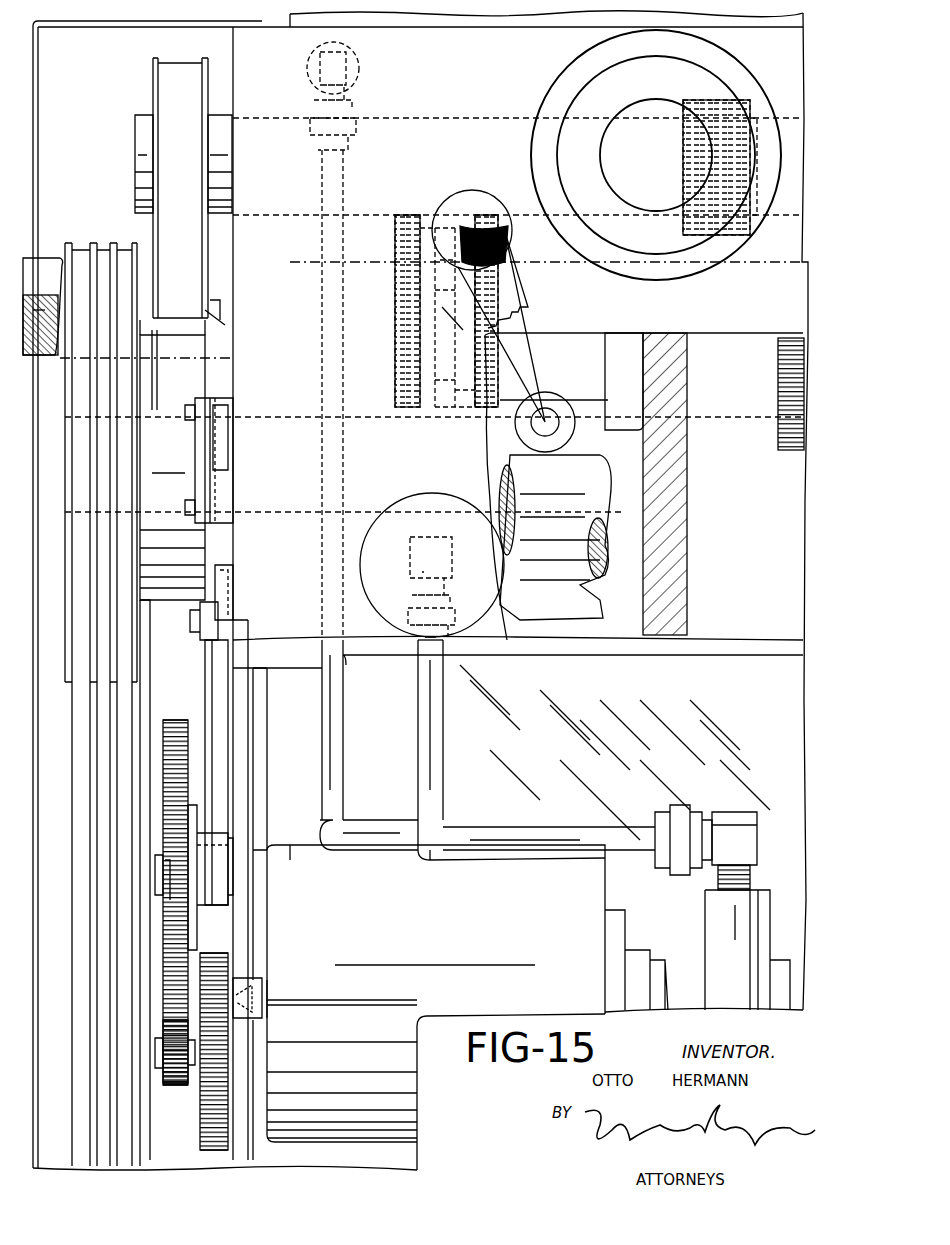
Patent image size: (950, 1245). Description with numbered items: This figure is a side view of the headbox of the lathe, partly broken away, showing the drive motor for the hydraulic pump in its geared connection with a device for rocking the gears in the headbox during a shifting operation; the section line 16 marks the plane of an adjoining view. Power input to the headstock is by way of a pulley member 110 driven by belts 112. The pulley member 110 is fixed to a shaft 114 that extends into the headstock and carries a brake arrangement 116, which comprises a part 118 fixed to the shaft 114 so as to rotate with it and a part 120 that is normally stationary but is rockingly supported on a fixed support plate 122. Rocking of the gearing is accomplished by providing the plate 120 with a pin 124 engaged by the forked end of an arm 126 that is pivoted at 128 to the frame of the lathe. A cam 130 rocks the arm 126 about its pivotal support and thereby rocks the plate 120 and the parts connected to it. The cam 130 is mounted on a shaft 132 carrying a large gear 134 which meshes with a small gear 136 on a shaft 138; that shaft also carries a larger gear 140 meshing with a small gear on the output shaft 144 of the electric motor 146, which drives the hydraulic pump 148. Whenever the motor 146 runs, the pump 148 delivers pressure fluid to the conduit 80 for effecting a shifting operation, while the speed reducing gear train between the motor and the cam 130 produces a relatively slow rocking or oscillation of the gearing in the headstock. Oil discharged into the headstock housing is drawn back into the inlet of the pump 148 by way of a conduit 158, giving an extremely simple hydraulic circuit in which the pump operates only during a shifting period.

The section line 16 is at (80, 46).
The conduit 80 is at (336, 750).
The pulley member 110 is at (90, 243).
The belts 112 is at (128, 718).
The shaft 114 is at (274, 419).
The brake arrangement 116 is at (253, 327).
The brake part 118 is at (210, 385).
The plate 120 is at (225, 316).
The fixed support plate 122 is at (228, 550).
The pin 124 is at (190, 620).
The arm 126 is at (218, 733).
The pivot 128 is at (230, 797).
The cam 130 is at (230, 840).
The shaft 132 is at (228, 872).
The large gear 134 is at (170, 760).
The small gear 136 is at (178, 1086).
The shaft 138 is at (150, 1058).
The larger gear 140 is at (215, 1128).
The output shaft 144 is at (250, 993).
The electric motor 146 is at (512, 953).
The hydraulic pump 148 is at (693, 983).
The conduit 158 is at (440, 750).